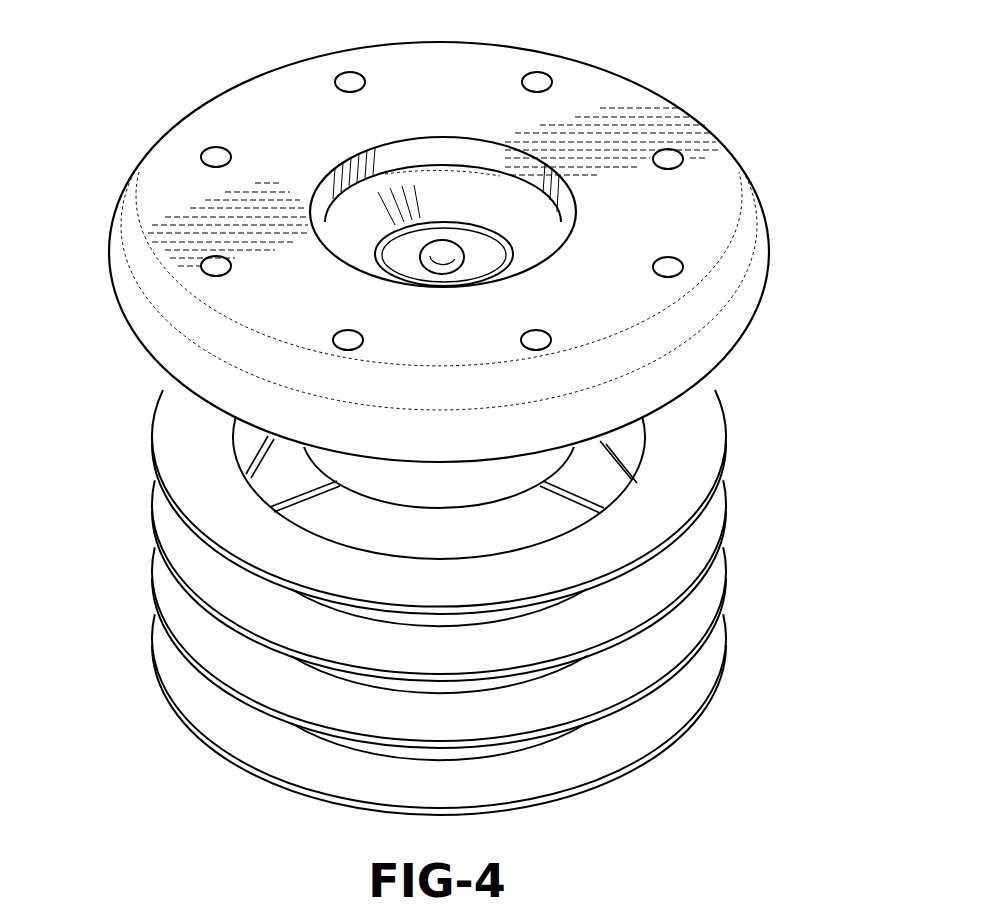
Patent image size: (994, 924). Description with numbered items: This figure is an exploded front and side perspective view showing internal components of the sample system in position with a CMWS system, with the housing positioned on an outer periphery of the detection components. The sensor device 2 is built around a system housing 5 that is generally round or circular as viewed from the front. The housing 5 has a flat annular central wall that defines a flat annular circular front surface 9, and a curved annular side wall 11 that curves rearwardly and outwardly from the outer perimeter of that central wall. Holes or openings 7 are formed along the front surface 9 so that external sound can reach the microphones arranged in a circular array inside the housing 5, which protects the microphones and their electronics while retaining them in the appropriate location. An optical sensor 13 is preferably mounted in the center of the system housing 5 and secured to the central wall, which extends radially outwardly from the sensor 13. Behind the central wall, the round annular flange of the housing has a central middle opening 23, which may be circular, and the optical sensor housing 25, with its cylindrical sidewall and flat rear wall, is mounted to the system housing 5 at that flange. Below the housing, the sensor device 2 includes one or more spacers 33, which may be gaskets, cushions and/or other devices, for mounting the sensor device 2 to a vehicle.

The sensor device 2 is at (426, 407).
The system housing 5 is at (232, 100).
The holes 7 is at (349, 78).
The front surface 9 is at (440, 341).
The curved annular side wall 11 is at (155, 343).
The optical sensor 13 is at (468, 231).
The central middle opening 23 is at (438, 157).
The optical sensor housing 25 is at (513, 482).
The spacers 33 is at (168, 442).